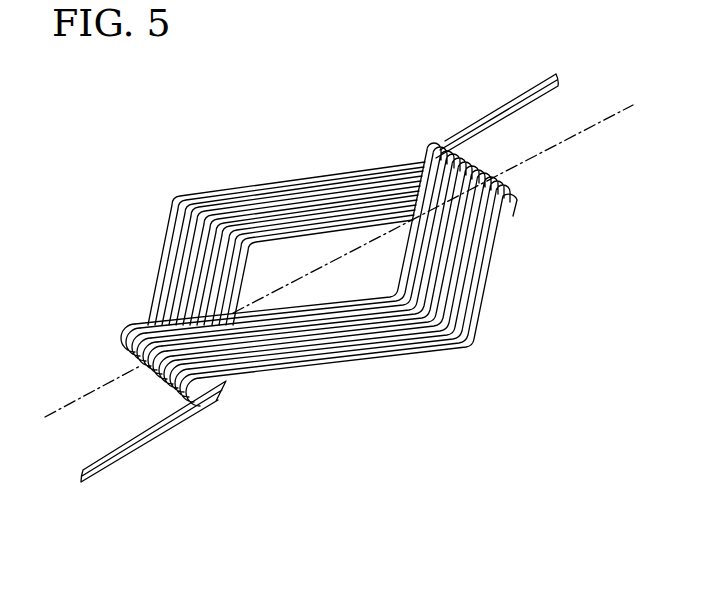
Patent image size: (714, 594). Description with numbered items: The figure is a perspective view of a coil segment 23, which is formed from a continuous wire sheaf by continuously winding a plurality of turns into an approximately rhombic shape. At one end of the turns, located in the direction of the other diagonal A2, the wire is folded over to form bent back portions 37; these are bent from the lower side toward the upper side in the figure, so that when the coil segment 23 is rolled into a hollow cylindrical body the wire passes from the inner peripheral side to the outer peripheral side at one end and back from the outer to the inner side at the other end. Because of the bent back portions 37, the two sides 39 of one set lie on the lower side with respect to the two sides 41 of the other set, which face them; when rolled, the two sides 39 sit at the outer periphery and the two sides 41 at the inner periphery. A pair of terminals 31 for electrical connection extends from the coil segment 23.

The coil segment 23 is at (366, 217).
The terminal 31 is at (498, 108).
The bent back portion 37 is at (517, 188).
The two sides of one set 39 is at (160, 257).
The two sides of the other set 41 is at (473, 308).
The other diagonal A2 is at (582, 132).